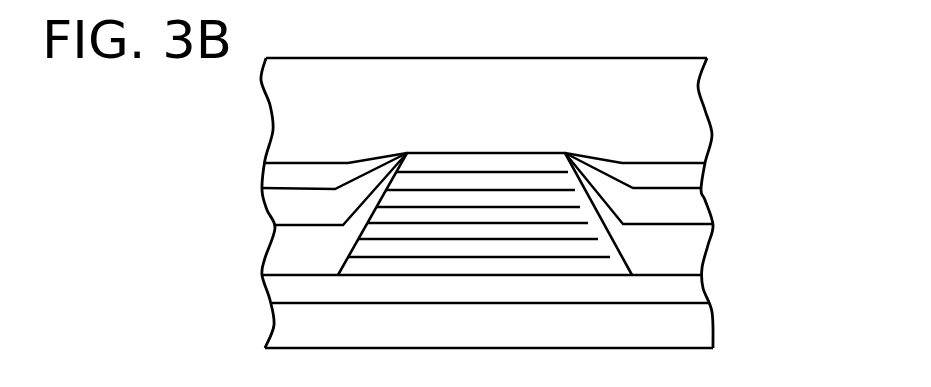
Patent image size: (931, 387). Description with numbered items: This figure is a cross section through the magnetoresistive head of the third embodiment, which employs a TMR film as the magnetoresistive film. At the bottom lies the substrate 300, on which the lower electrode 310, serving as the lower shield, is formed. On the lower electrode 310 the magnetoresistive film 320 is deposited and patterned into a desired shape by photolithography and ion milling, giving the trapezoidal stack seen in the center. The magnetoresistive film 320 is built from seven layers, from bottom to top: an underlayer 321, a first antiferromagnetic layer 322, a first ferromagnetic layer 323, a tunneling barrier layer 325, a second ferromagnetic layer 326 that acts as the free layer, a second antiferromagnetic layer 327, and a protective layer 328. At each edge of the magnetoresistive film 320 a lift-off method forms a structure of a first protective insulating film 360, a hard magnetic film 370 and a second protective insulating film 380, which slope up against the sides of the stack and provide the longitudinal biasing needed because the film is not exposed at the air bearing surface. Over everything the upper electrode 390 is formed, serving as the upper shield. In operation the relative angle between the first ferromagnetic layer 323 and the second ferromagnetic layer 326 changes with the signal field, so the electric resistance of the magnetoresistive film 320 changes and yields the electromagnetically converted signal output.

The substrate 300 is at (489, 331).
The lower electrode 310 is at (491, 290).
The magnetoresistive film 320 is at (601, 206).
The underlayer 321 is at (576, 293).
The first antiferromagnetic layer 322 is at (607, 250).
The first ferromagnetic layer 323 is at (592, 232).
The tunneling barrier layer 325 is at (582, 218).
The second ferromagnetic layer 326 is at (572, 200).
The second antiferromagnetic layer 327 is at (563, 182).
The protective layer 328 is at (580, 150).
The first protective insulating film 360 is at (487, 214).
The hard magnetic film 370 is at (488, 189).
The second protective insulating film 380 is at (484, 171).
The upper electrode 390 is at (487, 203).